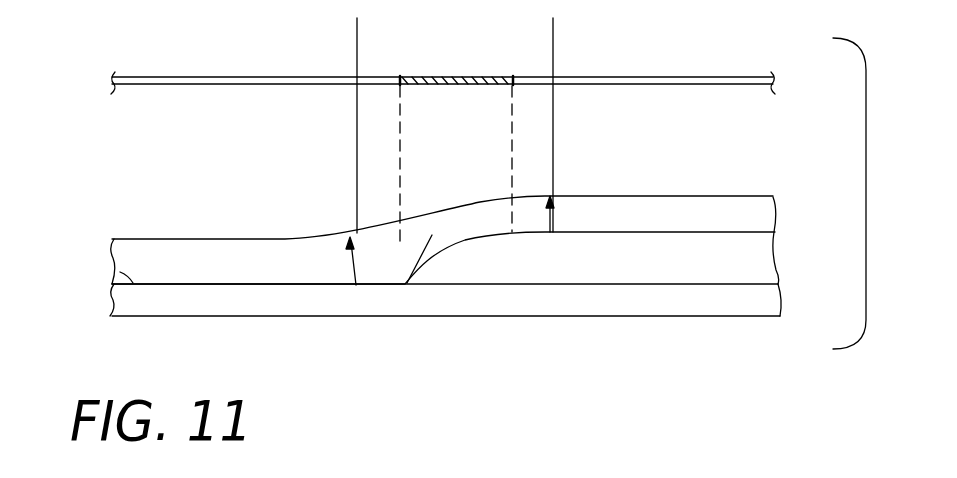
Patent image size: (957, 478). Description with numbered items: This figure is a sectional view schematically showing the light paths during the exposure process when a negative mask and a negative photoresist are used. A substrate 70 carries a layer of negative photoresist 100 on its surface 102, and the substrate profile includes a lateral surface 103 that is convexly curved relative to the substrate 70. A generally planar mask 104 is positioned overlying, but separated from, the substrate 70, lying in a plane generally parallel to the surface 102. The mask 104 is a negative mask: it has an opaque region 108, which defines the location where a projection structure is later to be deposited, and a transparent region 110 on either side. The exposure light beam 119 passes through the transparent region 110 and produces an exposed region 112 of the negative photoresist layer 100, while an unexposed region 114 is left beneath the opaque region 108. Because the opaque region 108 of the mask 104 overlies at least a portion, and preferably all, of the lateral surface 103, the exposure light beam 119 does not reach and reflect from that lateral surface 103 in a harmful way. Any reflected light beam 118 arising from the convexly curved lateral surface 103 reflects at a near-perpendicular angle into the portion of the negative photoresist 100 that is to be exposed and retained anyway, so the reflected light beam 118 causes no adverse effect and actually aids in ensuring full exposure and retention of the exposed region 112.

The substrate 70 is at (785, 232).
The negative photoresist layer 100 is at (757, 213).
The surface 102 is at (133, 283).
The lateral surface 103 is at (463, 245).
The mask 104 is at (142, 77).
The opaque region 108 is at (455, 77).
The transparent region 110 is at (293, 77).
The exposed region 112 is at (268, 273).
The unexposed region 114 is at (407, 283).
The reflected light beam 118 is at (352, 258).
The exposure light beam 119 is at (357, 131).